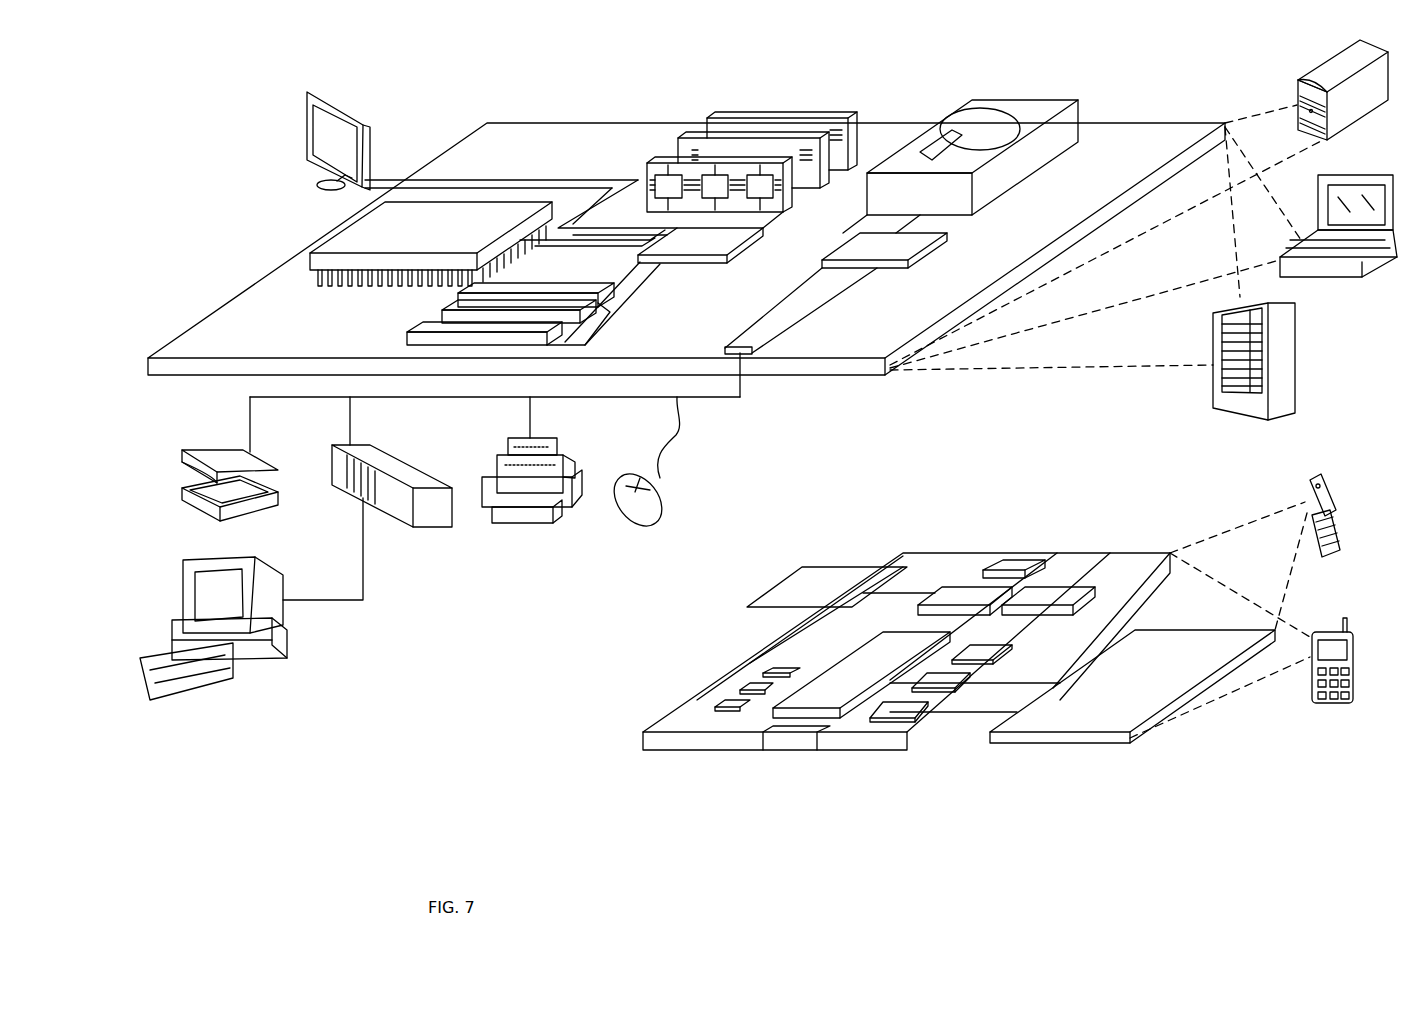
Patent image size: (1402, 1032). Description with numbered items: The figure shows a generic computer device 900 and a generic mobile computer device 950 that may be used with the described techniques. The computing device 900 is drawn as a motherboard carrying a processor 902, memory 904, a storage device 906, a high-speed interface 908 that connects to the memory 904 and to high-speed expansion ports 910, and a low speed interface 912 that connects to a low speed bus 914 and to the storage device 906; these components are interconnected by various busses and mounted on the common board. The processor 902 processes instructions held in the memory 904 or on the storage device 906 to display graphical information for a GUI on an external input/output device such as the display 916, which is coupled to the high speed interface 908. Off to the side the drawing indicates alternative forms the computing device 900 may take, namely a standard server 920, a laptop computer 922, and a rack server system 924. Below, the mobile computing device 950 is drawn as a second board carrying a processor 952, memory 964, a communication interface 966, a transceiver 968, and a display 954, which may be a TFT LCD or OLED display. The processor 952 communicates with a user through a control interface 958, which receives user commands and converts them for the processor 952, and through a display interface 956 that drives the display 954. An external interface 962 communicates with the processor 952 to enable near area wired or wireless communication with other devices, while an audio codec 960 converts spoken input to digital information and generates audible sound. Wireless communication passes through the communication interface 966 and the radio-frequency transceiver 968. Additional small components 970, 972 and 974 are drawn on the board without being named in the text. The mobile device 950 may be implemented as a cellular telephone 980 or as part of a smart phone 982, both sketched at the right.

The generic computer device 900 is at (437, 68).
The processor 902 is at (332, 232).
The memory 904 is at (777, 112).
The storage device 906 is at (1010, 96).
The high-speed interface 908 is at (714, 262).
The high-speed expansion ports 910 is at (428, 312).
The low speed interface 912 is at (855, 243).
The low speed bus 914 is at (737, 344).
The display 916 is at (300, 92).
The standard server 920 is at (1318, 70).
The laptop computer 922 is at (1373, 176).
The rack server system 924 is at (1296, 360).
The generic mobile computer device 950 is at (600, 760).
The processor 952 is at (832, 672).
The display 954 is at (1172, 636).
The display interface 956 is at (920, 717).
The control interface 958 is at (948, 680).
The audio codec 960 is at (990, 647).
The external interface 962 is at (791, 738).
The memory 964 is at (745, 688).
The communication interface 966 is at (962, 586).
The transceiver 968 is at (1058, 586).
The sensor chip 970 is at (1015, 560).
The antenna trace 972 is at (887, 562).
The antenna pad 974 is at (806, 560).
The cellular telephone 980 is at (1312, 472).
The smart phone 982 is at (1324, 632).